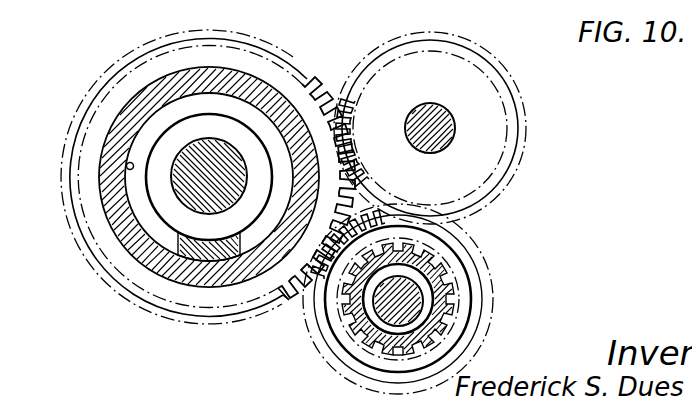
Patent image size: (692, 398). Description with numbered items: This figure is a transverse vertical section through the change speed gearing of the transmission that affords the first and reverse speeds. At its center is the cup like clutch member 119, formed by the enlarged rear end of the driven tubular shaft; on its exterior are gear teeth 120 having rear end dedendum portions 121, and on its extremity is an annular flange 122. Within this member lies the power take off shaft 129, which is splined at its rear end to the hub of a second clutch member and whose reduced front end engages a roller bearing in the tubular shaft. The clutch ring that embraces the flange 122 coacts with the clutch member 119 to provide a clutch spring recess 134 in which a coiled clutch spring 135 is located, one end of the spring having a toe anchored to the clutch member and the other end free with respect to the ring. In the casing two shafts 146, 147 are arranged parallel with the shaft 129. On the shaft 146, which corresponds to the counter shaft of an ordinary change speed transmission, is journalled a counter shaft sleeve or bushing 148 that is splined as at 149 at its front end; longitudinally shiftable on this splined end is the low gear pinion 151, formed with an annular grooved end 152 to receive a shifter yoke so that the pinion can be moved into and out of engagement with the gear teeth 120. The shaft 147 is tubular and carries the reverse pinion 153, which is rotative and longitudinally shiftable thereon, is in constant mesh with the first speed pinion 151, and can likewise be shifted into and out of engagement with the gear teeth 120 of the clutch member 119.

The cup like clutch member 119 is at (133, 273).
The gear teeth 120 is at (356, 62).
The rear end dedendum portions 121 is at (288, 302).
The annular flange 122 is at (140, 97).
The power take off shaft 129 is at (190, 197).
The clutch spring recess 134 is at (127, 168).
The coiled clutch spring 135 is at (145, 210).
The shaft 146 is at (413, 308).
The shaft 147 is at (470, 88).
The counter shaft sleeve or bushing 148 is at (447, 291).
The splines 149 is at (377, 353).
The low gear pinion 151 is at (340, 322).
The annular grooved end 152 is at (452, 327).
The reverse pinion 153 is at (492, 127).